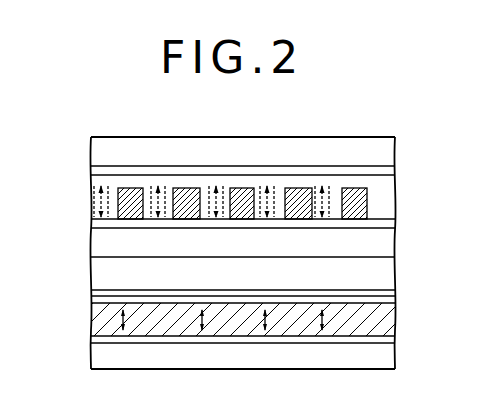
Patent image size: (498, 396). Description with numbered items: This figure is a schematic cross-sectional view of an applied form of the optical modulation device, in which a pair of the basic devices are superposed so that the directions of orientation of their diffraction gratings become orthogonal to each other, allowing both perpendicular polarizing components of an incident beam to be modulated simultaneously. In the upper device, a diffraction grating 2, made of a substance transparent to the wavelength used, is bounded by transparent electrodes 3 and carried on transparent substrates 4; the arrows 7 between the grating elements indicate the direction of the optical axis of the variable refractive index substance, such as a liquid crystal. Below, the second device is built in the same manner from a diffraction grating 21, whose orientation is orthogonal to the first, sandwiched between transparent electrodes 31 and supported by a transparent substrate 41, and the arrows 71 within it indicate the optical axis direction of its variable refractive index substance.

The diffraction grating 2 is at (357, 203).
The transparent electrode 3 is at (388, 173).
The transparent substrate 4 is at (100, 155).
The optical axis direction 7 is at (97, 200).
The diffraction grating 21 is at (388, 318).
The transparent electrode 31 is at (388, 292).
The transparent substrate 41 is at (100, 355).
The optical axis direction 71 is at (122, 320).